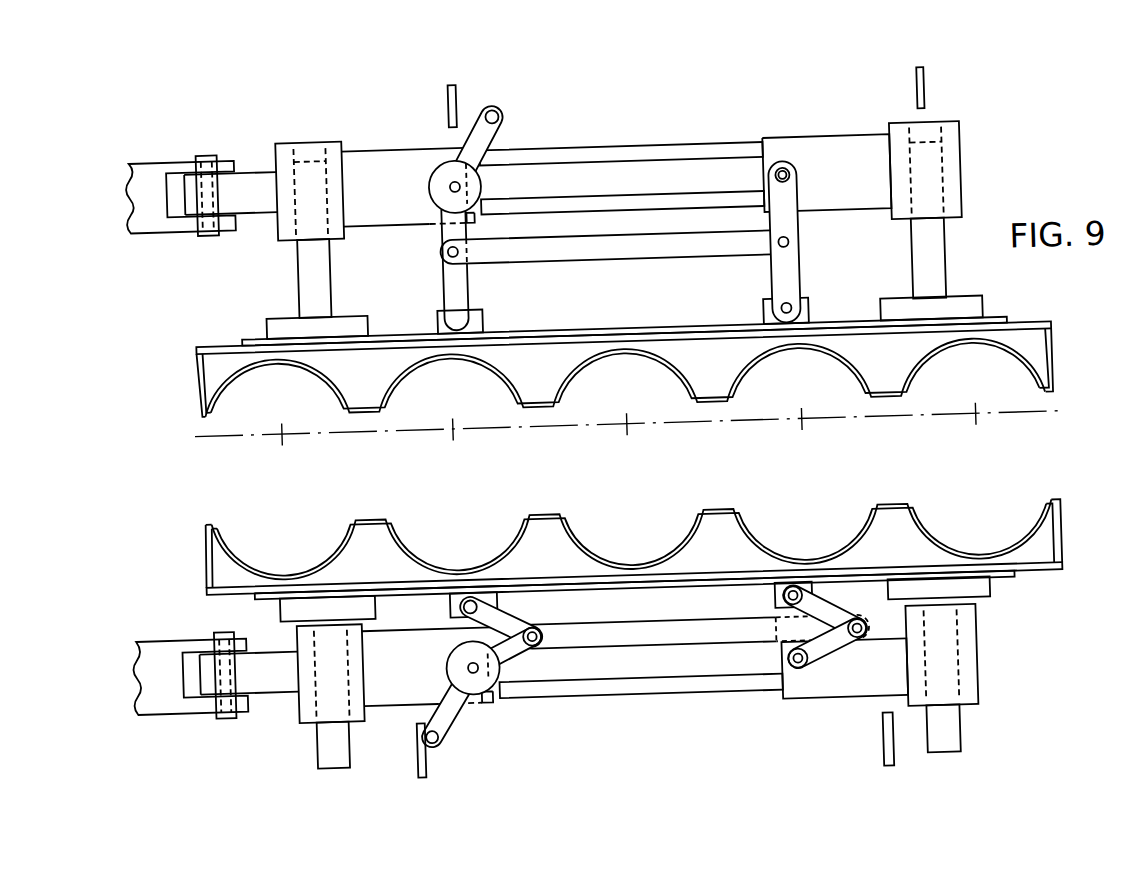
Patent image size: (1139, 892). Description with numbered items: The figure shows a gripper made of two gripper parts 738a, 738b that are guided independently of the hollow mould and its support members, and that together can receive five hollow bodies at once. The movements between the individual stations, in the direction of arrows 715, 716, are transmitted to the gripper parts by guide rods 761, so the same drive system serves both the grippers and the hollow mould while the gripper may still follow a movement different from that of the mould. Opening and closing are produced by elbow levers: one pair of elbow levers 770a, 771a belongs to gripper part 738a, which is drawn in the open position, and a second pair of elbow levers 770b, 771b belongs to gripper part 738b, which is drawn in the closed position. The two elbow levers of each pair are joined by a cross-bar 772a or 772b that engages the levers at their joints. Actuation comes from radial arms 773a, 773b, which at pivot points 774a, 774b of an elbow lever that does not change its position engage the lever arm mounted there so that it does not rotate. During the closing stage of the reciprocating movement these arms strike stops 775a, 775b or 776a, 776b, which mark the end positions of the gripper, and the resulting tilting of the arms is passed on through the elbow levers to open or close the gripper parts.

The guide rod 761 is at (153, 203).
The stop 776a is at (457, 96).
The stop 776b is at (927, 100).
The pivot point 774b is at (462, 183).
The radial arm 773b is at (512, 112).
The elbow lever 770b is at (482, 276).
The cross-bar 772b is at (594, 250).
The elbow lever 771b is at (807, 266).
The gripper part 738b is at (1048, 368).
The arrow 716 is at (1050, 460).
The arrow 715 is at (1119, 459).
The gripper part 738a is at (1050, 546).
The elbow lever 771a is at (832, 607).
The elbow lever 770a is at (516, 610).
The cross-bar 772a is at (629, 629).
The radial arm 773a is at (534, 643).
The pivot point 774a is at (471, 670).
The stop 775a is at (408, 764).
The stop 775b is at (874, 762).